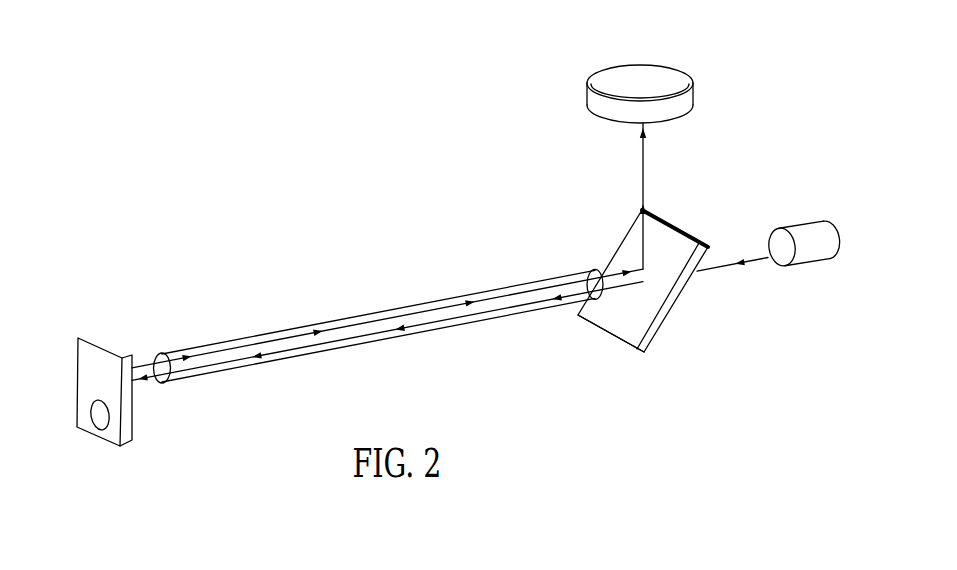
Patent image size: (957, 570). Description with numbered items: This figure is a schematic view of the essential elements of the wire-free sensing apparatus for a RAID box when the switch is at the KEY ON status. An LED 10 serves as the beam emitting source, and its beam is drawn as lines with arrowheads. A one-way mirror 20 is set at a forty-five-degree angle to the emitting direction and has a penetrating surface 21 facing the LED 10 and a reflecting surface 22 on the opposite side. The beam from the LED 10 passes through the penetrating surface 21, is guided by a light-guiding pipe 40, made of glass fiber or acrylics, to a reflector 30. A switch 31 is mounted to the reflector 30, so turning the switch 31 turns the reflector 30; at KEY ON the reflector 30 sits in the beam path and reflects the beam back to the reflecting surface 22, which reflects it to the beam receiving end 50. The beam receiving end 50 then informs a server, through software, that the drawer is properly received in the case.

The LED 10 is at (798, 230).
The one-way mirror 20 is at (647, 334).
The penetrating surface 21 is at (678, 310).
The reflecting surface 22 is at (615, 322).
The reflector 30 is at (90, 368).
The switch 31 is at (103, 413).
The light-guiding pipe 40 is at (387, 310).
The beam receiving end 50 is at (648, 78).